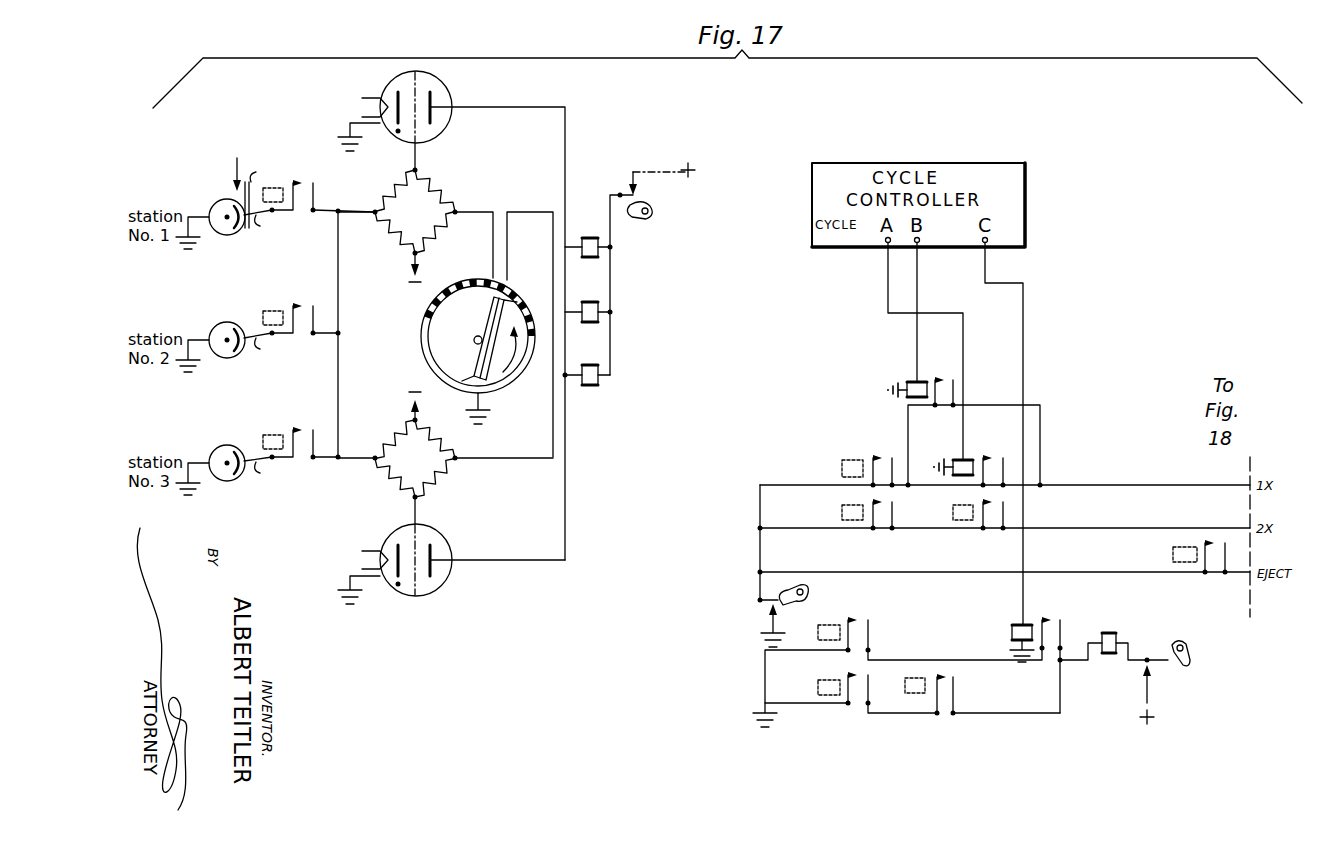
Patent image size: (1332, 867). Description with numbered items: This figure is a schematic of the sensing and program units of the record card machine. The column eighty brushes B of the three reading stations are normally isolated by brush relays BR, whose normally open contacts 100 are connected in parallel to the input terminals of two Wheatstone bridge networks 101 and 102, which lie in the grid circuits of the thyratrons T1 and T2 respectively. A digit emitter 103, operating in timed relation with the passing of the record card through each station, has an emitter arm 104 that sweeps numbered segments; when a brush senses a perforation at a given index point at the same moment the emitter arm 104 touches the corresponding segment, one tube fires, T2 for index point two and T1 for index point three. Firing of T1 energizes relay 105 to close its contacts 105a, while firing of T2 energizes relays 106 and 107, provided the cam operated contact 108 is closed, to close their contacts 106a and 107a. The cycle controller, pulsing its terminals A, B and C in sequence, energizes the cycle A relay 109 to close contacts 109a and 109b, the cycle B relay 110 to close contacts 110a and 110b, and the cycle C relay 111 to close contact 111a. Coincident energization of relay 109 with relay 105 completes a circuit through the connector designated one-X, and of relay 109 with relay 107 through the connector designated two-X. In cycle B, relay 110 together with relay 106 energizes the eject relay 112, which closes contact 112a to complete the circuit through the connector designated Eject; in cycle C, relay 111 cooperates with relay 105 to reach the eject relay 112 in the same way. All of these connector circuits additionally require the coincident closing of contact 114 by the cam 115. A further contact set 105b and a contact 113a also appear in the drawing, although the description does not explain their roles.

The brush relay contacts 100 is at (303, 179).
The Wheatstone bridge network 101 is at (388, 190).
The Wheatstone bridge network 102 is at (388, 437).
The digit emitter 103 is at (422, 345).
The emitter arm 104 is at (474, 324).
The relay 105 is at (597, 236).
The contacts of relay 105 105a is at (877, 456).
The relay contact 105b is at (868, 618).
The relay 106 is at (590, 301).
The contacts of relay 106 106a is at (866, 705).
The relay 107 is at (595, 386).
The contacts of relay 107 107a is at (888, 530).
The cam operated contact 108 is at (638, 192).
The cycle A relay 109 is at (956, 458).
The contacts of relay 109 109a is at (985, 456).
The contacts of relay 109 109b is at (994, 530).
The cycle B relay 110 is at (908, 381).
The contacts of relay 110 110a is at (958, 677).
The contacts of relay 110 110b is at (946, 363).
The cycle C relay 111 is at (1013, 624).
The contact of relay 111 111a is at (1058, 605).
The eject relay 112 is at (1173, 555).
The contact of eject relay 112 112a is at (1211, 575).
The cam switch 113a is at (1168, 664).
The contact 114 is at (766, 608).
The cam 115 is at (808, 590).
The thyratron T1 is at (452, 95).
The thyratron T2 is at (395, 590).